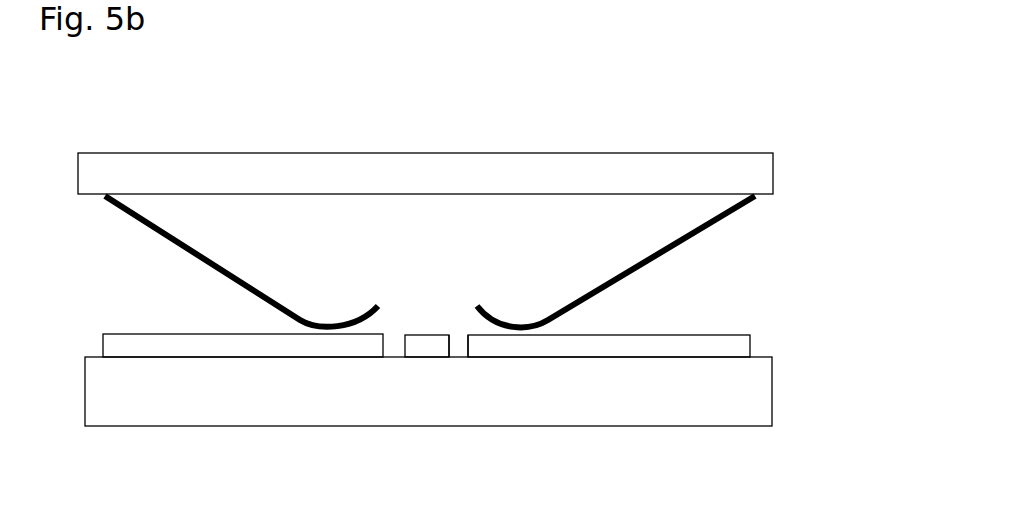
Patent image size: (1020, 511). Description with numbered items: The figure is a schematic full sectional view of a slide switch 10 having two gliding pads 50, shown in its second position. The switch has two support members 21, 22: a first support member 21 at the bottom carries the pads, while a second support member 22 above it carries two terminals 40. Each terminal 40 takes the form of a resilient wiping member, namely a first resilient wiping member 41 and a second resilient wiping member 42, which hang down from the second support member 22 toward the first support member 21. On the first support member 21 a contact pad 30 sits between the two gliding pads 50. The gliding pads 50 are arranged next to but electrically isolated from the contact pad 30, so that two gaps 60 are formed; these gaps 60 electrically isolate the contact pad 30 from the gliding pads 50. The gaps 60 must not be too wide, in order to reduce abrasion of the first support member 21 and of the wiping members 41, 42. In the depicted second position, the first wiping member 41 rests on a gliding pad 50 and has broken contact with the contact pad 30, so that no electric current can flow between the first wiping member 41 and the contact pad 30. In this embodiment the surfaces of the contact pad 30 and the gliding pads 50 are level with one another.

The slide switch 10 is at (121, 117).
The second support member 22 is at (743, 170).
The terminal 40 is at (461, 261).
The first resilient wiping member 41 is at (193, 255).
The second resilient wiping member 42 is at (630, 273).
The first support member 21 is at (717, 388).
The gliding pad 50 is at (265, 346).
The gap 60 is at (458, 345).
The contact pad 30 is at (602, 348).